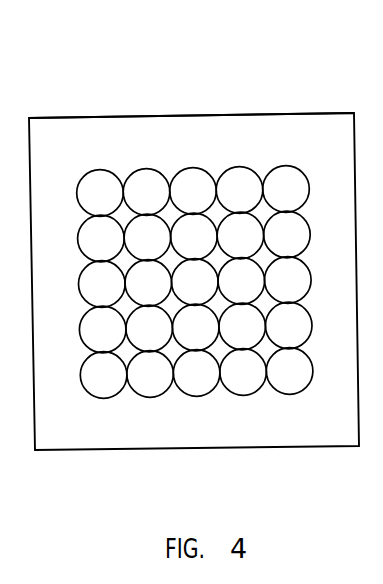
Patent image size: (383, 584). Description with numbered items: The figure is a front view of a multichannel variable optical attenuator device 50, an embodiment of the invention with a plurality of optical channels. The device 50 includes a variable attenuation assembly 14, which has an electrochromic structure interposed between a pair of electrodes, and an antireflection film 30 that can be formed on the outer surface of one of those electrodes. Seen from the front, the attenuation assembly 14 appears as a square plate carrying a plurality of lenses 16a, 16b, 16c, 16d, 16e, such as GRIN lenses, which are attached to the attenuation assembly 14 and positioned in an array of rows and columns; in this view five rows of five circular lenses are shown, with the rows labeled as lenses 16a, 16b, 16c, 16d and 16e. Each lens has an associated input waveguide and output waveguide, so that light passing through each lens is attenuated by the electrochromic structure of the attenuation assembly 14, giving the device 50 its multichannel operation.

The multichannel VOA device 50 is at (254, 70).
The antireflection film 30 is at (316, 130).
The variable attenuation assembly 14 is at (138, 116).
The lens 16a is at (153, 170).
The lens 16b is at (85, 238).
The lens 16c is at (88, 288).
The lens 16d is at (90, 335).
The lens 16e is at (192, 387).